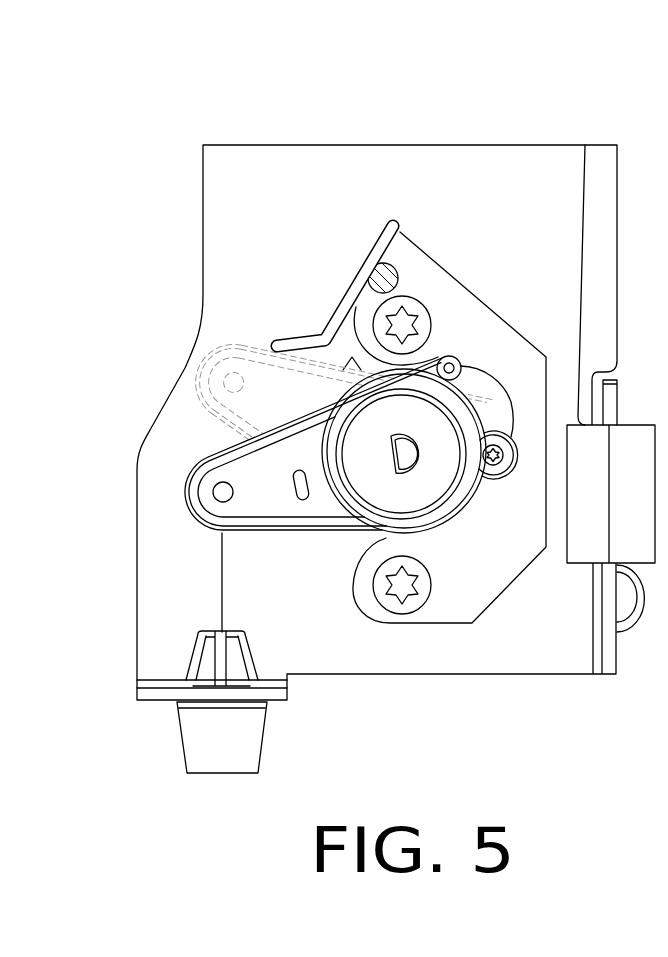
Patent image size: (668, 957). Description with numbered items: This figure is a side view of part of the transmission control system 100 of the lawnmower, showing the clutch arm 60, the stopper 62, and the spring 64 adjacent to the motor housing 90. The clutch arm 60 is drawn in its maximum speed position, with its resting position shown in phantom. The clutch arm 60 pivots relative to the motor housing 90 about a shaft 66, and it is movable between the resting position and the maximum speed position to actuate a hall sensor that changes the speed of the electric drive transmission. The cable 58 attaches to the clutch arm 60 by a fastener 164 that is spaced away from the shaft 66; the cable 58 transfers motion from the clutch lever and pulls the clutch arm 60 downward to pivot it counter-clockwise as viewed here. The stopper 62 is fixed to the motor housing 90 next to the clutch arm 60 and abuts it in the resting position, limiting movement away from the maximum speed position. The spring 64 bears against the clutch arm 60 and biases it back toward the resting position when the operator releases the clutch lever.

The transmission control system 100 is at (358, 412).
The motor housing 90 is at (462, 145).
The stopper 62 is at (336, 310).
The spring 64 is at (458, 373).
The shaft 66 is at (407, 458).
The clutch arm 60 is at (295, 473).
The fastener 164 is at (218, 497).
The cable 58 is at (222, 580).